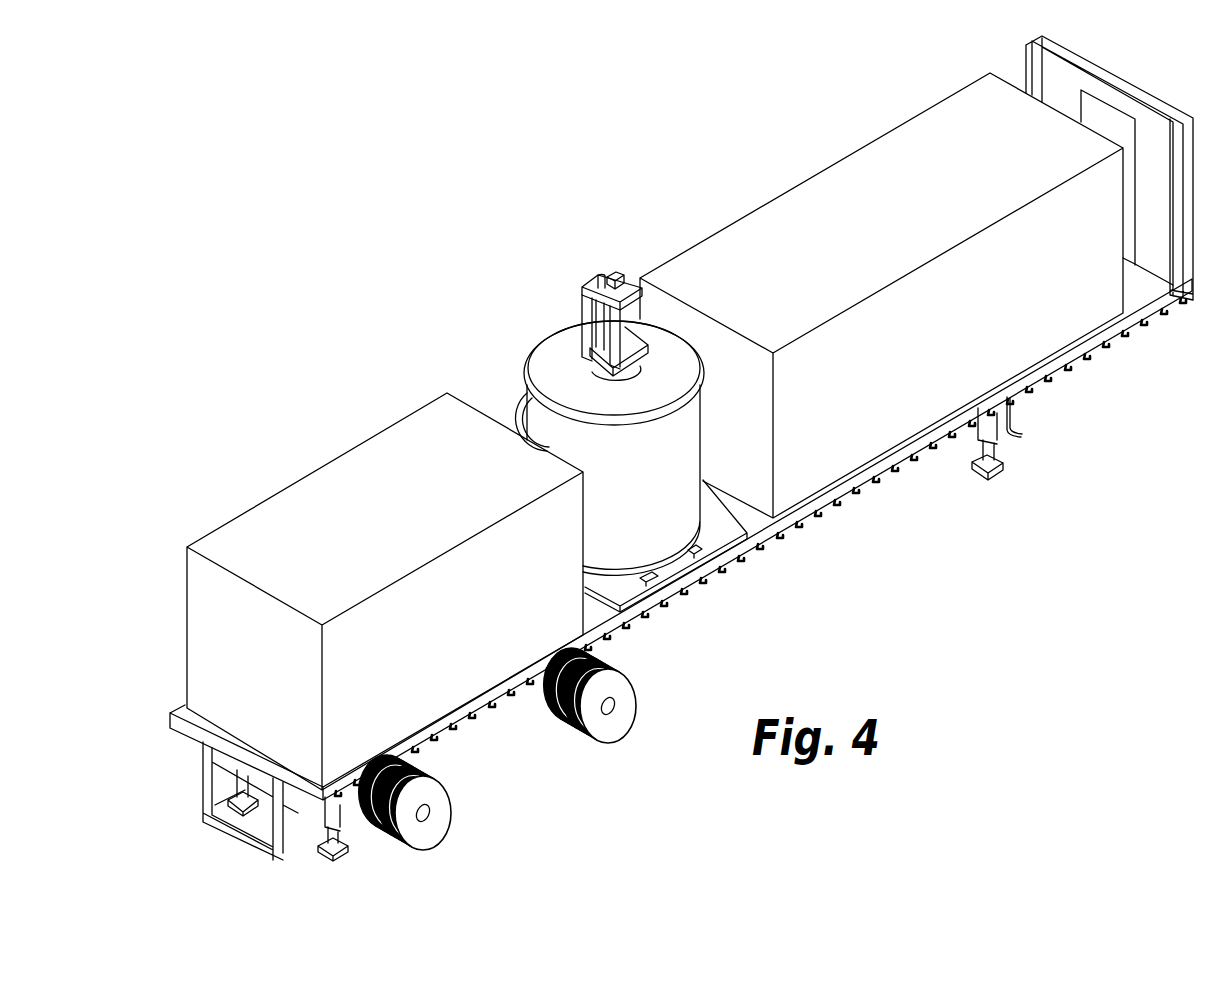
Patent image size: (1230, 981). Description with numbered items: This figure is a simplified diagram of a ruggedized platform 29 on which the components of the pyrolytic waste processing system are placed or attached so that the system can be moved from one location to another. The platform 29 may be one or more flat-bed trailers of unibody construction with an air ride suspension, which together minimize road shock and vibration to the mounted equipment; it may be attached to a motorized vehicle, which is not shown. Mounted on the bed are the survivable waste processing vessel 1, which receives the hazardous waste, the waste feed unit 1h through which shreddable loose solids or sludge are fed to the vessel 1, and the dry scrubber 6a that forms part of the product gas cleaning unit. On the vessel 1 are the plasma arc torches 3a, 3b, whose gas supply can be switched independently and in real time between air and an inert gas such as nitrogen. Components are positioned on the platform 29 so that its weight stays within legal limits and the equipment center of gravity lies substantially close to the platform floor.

The survivable waste processing vessel 1 is at (548, 340).
The waste feed unit 1h is at (873, 168).
The plasma arc torch 3a is at (623, 274).
The plasma arc torch 3b is at (613, 272).
The dry scrubber 6a is at (388, 452).
The ruggedized platform 29 is at (1060, 373).